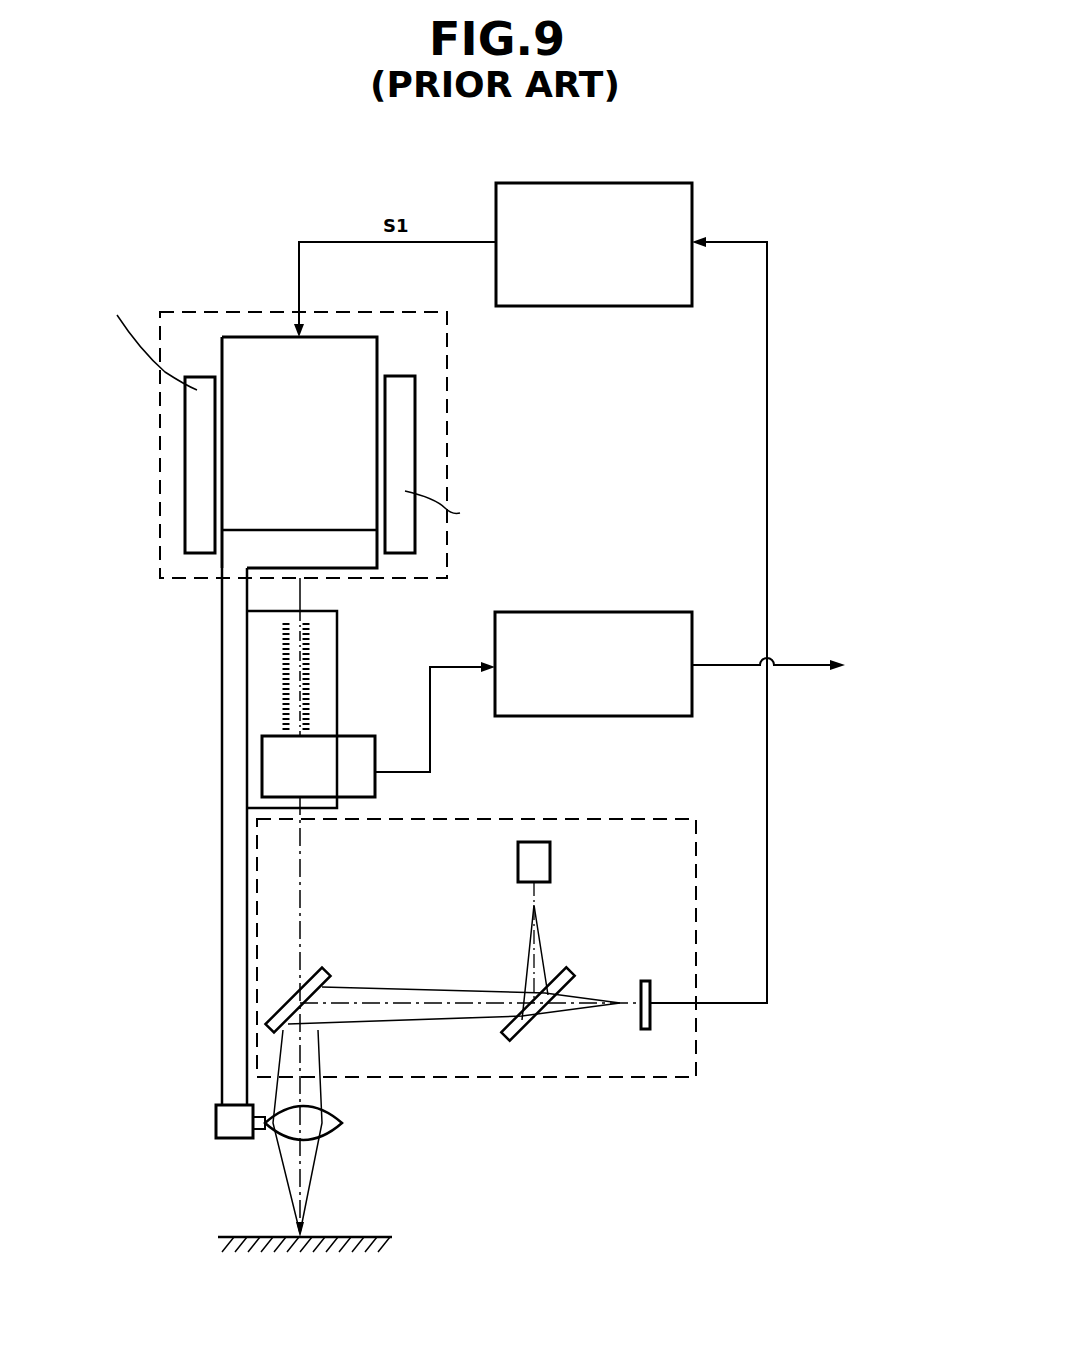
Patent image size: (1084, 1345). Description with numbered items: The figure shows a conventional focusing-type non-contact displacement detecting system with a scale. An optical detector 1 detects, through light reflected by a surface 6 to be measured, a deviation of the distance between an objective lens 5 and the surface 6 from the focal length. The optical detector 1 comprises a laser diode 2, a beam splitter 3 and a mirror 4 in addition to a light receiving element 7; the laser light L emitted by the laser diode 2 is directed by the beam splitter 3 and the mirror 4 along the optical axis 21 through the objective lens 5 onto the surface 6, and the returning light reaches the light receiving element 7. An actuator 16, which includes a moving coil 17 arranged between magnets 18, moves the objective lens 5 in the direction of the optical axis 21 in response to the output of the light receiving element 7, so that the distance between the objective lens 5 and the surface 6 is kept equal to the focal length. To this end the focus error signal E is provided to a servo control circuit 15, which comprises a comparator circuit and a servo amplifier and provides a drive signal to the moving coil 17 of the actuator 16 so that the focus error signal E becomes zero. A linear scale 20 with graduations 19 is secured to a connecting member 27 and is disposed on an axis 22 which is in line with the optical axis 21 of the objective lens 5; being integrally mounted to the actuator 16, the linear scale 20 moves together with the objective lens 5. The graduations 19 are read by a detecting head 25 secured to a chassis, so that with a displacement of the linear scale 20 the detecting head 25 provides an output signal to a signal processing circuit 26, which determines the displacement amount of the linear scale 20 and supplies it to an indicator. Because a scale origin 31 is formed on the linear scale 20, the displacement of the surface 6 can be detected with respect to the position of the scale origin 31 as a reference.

The optical detector 1 is at (522, 1078).
The laser diode 2 is at (518, 858).
The beam splitter 3 is at (560, 968).
The mirror 4 is at (330, 975).
The objective lens 5 is at (340, 1123).
The surface to be measured 6 is at (355, 1237).
The light receiving element 7 is at (655, 1018).
The servo control circuit 15 is at (692, 186).
The actuator 16 is at (232, 308).
The moving coil 17 is at (340, 337).
The magnet 18 is at (187, 413).
The graduations 19 is at (310, 665).
The linear scale 20 is at (337, 613).
The optical axis 21 is at (305, 1097).
The axis 22 is at (305, 915).
The detecting head 25 is at (375, 784).
The signal processing circuit 26 is at (642, 612).
The connecting member 27 is at (222, 690).
The scale origin 31 is at (280, 708).
The laser beam L is at (540, 930).
The focus error signal E is at (766, 868).